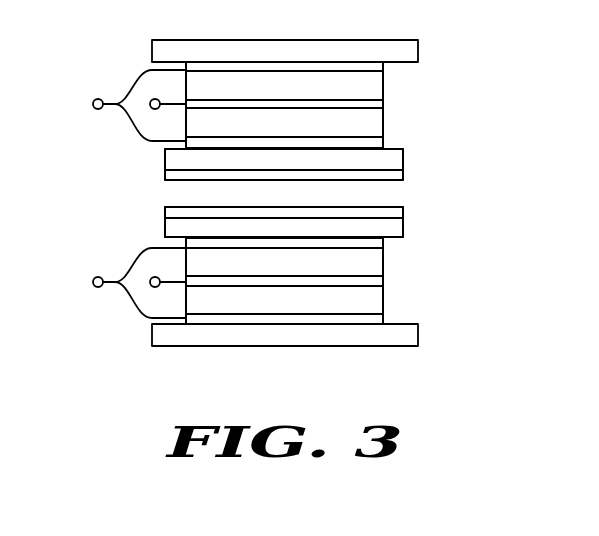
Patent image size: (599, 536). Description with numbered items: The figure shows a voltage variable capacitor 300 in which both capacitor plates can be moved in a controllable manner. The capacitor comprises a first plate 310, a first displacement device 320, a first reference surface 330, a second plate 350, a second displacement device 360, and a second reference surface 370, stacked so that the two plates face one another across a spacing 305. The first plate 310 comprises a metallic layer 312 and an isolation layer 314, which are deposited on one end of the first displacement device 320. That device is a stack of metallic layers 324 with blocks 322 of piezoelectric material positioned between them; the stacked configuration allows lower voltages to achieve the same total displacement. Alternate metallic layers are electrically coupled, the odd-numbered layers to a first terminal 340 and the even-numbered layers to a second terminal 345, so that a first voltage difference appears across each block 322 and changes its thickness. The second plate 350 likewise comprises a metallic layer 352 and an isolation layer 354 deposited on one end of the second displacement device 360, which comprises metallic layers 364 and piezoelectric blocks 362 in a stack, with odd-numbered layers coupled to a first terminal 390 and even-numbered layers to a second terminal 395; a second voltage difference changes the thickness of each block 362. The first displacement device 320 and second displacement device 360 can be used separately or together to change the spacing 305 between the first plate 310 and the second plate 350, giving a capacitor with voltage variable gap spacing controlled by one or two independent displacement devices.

The voltage variable capacitor 300 is at (124, 423).
The spacing 305 is at (410, 194).
The first plate 310 is at (418, 167).
The metallic layer 312 is at (165, 173).
The isolation layer 314 is at (165, 158).
The first displacement device 320 is at (417, 149).
The block of piezoelectric material 322 is at (286, 122).
The metallic layers 324 is at (385, 62).
The first reference surface 330 is at (150, 53).
The first terminal 340 is at (93, 104).
The second terminal 345 is at (151, 100).
The second plate 350 is at (417, 222).
The metallic layer 352 is at (165, 212).
The isolation layer 354 is at (165, 228).
The second displacement device 360 is at (417, 239).
The block of piezoelectric material 362 is at (274, 360).
The metallic layers 364 is at (385, 238).
The second reference surface 370 is at (150, 341).
The first terminal 390 is at (93, 282).
The second terminal 395 is at (151, 278).